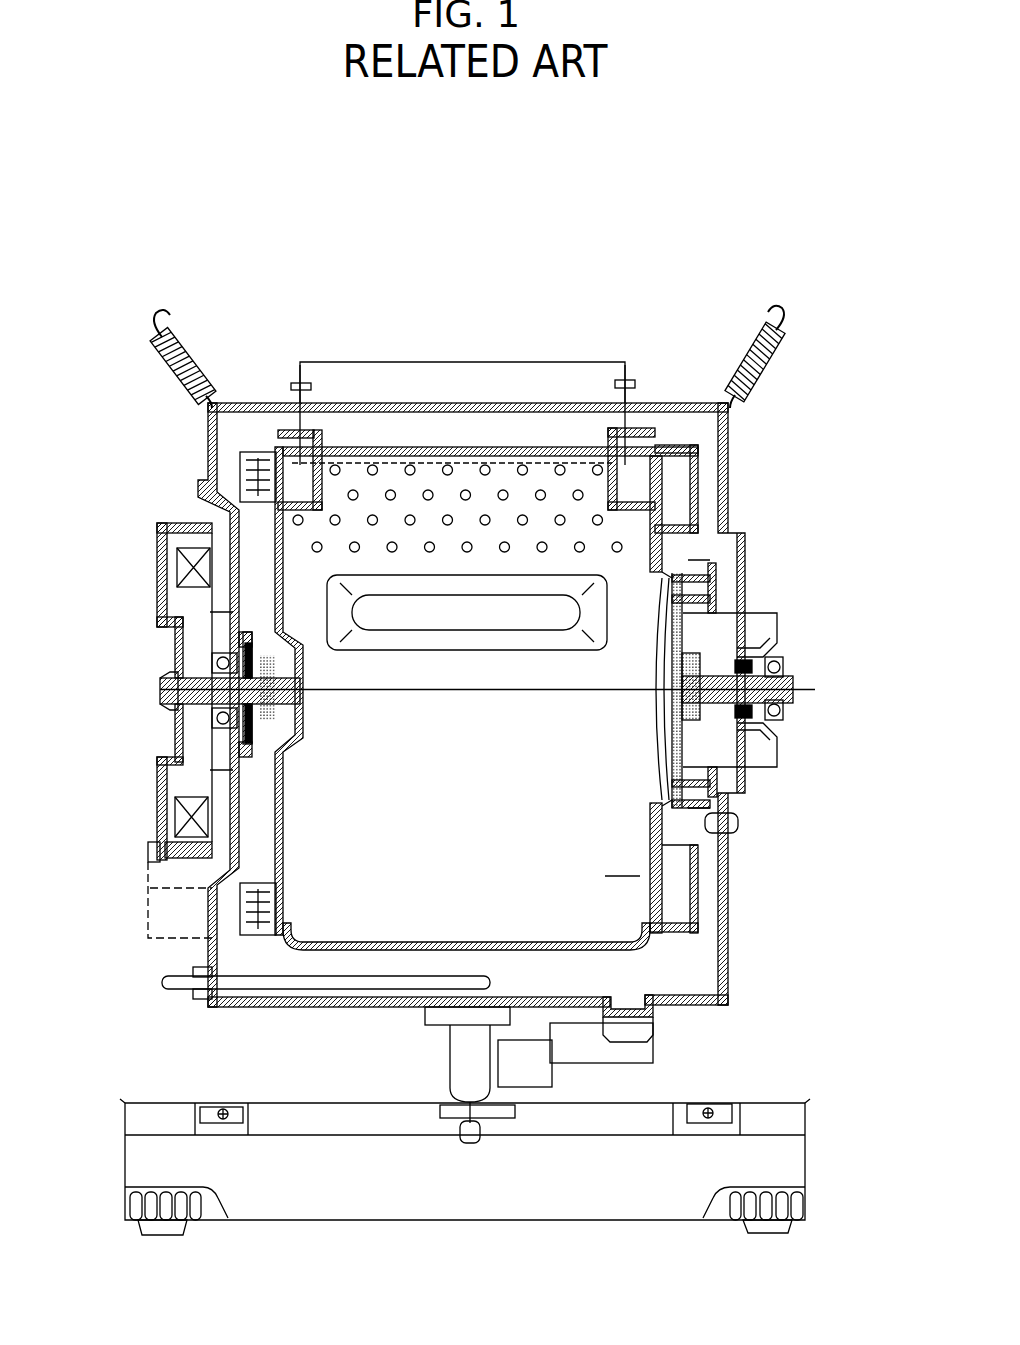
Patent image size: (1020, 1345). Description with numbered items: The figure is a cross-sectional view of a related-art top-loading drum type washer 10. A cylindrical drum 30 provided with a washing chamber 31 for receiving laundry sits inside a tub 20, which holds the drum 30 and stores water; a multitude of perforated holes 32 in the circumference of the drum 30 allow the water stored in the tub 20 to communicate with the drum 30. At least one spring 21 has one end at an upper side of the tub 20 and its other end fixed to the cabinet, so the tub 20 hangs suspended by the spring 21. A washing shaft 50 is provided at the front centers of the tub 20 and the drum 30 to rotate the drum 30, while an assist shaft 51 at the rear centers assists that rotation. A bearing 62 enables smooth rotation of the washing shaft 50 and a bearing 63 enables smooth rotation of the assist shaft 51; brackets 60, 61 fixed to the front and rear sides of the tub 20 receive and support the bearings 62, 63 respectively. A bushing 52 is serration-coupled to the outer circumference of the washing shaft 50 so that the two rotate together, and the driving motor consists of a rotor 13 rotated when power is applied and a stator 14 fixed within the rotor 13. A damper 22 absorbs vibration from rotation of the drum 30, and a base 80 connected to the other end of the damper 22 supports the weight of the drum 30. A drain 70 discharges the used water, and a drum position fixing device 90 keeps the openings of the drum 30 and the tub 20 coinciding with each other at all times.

The top-loading drum type washer 10 is at (624, 268).
The rotor 13 is at (181, 528).
The stator 14 is at (182, 566).
The tub 20 is at (265, 404).
The spring 21 is at (162, 357).
The damper 22 is at (460, 1055).
The drum 30 is at (413, 453).
The washing chamber 31 is at (603, 882).
The perforated holes 32 is at (449, 464).
The washing shaft 50 is at (158, 695).
The assist shaft 51 is at (797, 693).
The bushing 52 is at (160, 706).
The bracket 60 is at (217, 778).
The bracket 61 is at (765, 615).
The bearing 62 is at (218, 663).
The bearing 63 is at (785, 667).
The drain 70 is at (632, 1010).
The base 80 is at (788, 1157).
The drum position fixing device 90 is at (160, 923).